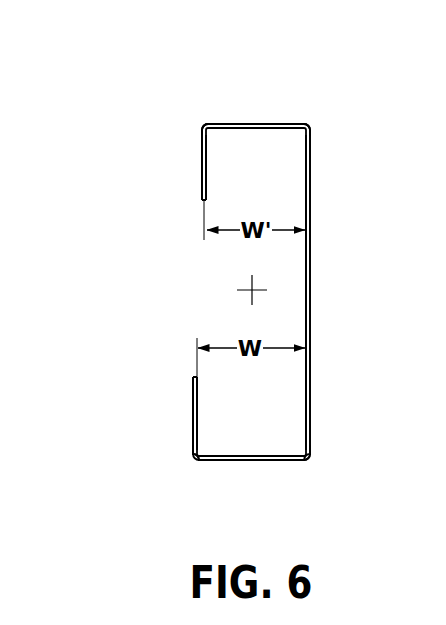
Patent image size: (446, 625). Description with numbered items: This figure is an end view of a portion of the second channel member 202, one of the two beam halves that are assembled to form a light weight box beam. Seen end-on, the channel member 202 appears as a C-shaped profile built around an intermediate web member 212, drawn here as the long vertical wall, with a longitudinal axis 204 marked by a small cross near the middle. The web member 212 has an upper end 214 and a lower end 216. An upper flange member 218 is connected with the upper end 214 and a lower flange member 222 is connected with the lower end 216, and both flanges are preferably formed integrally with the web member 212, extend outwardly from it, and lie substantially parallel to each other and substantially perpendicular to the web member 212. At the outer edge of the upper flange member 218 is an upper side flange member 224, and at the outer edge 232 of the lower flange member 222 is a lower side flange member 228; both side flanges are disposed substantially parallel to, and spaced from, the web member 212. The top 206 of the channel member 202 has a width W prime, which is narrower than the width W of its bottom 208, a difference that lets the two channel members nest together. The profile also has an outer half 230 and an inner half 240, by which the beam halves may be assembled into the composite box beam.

The second channel member 202 is at (283, 123).
The longitudinal axis 204 is at (249, 288).
The top 206 is at (238, 105).
The bottom 208 is at (235, 471).
The intermediate web member 212 is at (310, 260).
The upper end 214 is at (317, 126).
The lower end 216 is at (199, 121).
The upper flange member 218 is at (265, 122).
The lower flange member 222 is at (270, 462).
The upper side flange member 224 is at (202, 155).
The lower side flange member 228 is at (192, 392).
The outer half 230 is at (310, 410).
The outer edge 232 is at (190, 462).
The inner half 240 is at (200, 188).